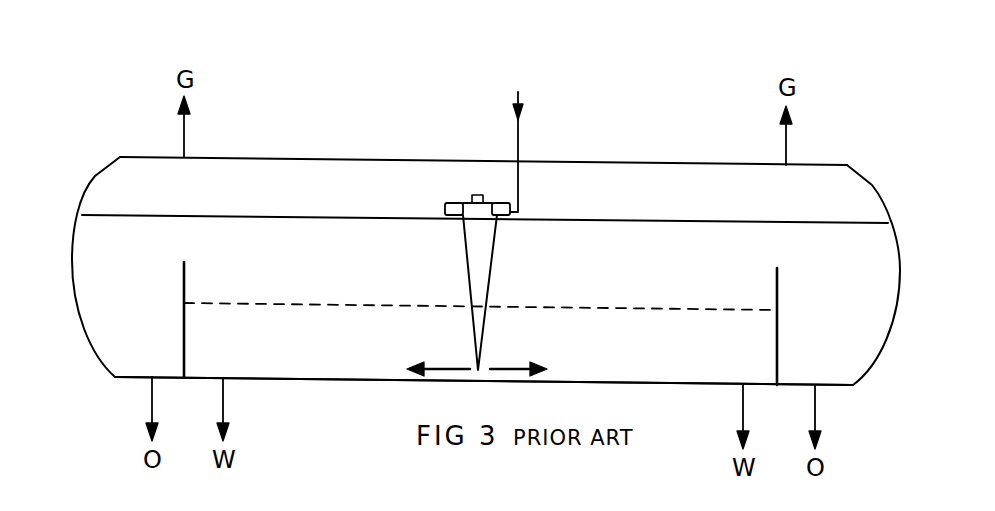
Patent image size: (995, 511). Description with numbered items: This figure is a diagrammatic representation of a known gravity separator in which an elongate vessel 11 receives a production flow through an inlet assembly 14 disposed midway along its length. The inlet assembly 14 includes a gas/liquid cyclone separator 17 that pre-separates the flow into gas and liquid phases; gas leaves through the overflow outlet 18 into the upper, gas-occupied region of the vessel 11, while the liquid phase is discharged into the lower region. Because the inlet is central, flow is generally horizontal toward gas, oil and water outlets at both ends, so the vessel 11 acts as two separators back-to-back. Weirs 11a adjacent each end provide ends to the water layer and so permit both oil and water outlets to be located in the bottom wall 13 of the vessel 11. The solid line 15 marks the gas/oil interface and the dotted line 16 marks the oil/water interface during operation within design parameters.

The vessel 11 is at (323, 158).
The weir 11a is at (920, 180).
The bottom wall 13 is at (303, 381).
The inlet assembly 14 is at (521, 140).
The gas/oil interface line 15 is at (680, 223).
The oil/water interface line 16 is at (289, 305).
The gas/liquid cyclone separator 17 is at (495, 258).
The overflow outlet 18 is at (474, 197).